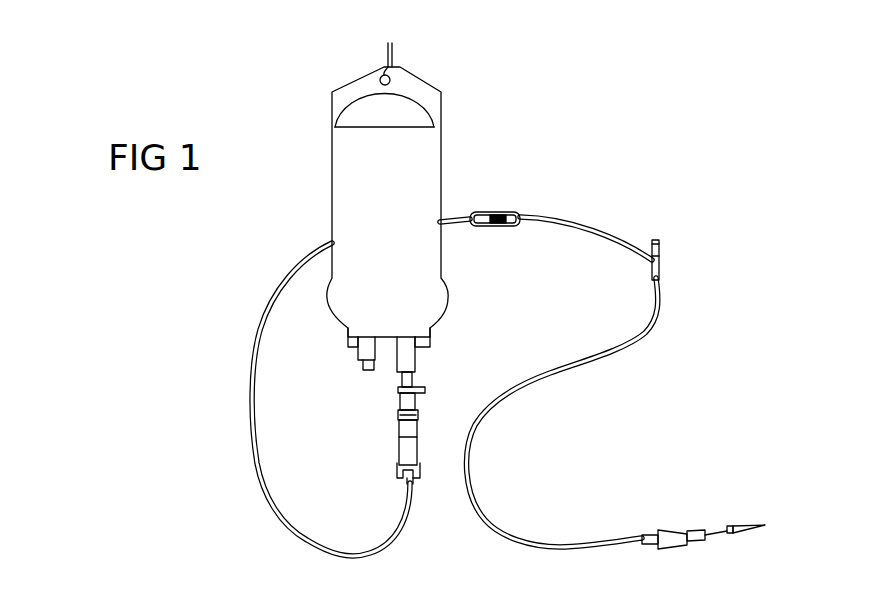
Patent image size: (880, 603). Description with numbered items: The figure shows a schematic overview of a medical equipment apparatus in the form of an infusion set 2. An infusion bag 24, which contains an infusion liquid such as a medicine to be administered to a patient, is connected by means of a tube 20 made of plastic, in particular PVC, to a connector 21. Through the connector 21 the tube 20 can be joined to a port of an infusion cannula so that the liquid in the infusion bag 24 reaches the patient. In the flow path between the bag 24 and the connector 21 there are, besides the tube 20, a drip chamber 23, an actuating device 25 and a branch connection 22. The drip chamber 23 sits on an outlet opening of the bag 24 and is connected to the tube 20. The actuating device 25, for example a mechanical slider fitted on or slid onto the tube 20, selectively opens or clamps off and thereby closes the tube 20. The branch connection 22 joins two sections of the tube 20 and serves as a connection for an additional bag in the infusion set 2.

The infusion set 2 is at (622, 197).
The tube 20 is at (560, 543).
The connector 21 is at (670, 537).
The branch connection 22 is at (660, 260).
The drip chamber 23 is at (405, 442).
The infusion bag 24 is at (420, 170).
The actuating device 25 is at (503, 212).